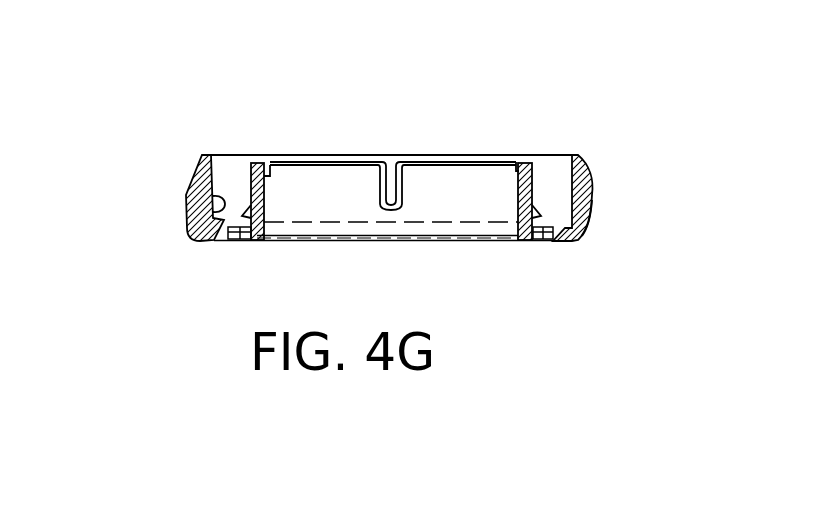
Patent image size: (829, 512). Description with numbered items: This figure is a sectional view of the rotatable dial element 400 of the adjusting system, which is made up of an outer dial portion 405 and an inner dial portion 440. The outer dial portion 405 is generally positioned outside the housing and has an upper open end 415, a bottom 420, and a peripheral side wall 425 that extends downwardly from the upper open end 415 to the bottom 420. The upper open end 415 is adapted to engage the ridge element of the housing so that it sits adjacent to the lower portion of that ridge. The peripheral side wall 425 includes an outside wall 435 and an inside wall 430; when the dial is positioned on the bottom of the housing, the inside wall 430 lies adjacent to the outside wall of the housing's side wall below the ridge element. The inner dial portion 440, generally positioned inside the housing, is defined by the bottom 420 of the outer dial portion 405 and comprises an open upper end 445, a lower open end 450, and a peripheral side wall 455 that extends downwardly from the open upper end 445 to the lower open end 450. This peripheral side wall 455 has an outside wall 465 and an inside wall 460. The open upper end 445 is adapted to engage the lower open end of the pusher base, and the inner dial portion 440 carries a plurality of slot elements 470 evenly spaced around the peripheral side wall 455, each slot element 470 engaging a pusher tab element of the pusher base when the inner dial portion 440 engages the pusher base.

The rotatable dial element 400 is at (596, 174).
The outer dial portion 405 is at (203, 157).
The upper open end 415 is at (544, 161).
The bottom 420 is at (545, 239).
The peripheral side wall 425 is at (188, 177).
The inside wall 430 is at (188, 216).
The outside wall 435 is at (592, 213).
The inner dial portion 440 is at (258, 158).
The open upper end 445 is at (456, 160).
The lower open end 450 is at (333, 243).
The peripheral side wall 455 is at (243, 200).
The inside wall 460 is at (524, 196).
The outside wall 465 is at (525, 195).
The slot element 470 is at (392, 187).